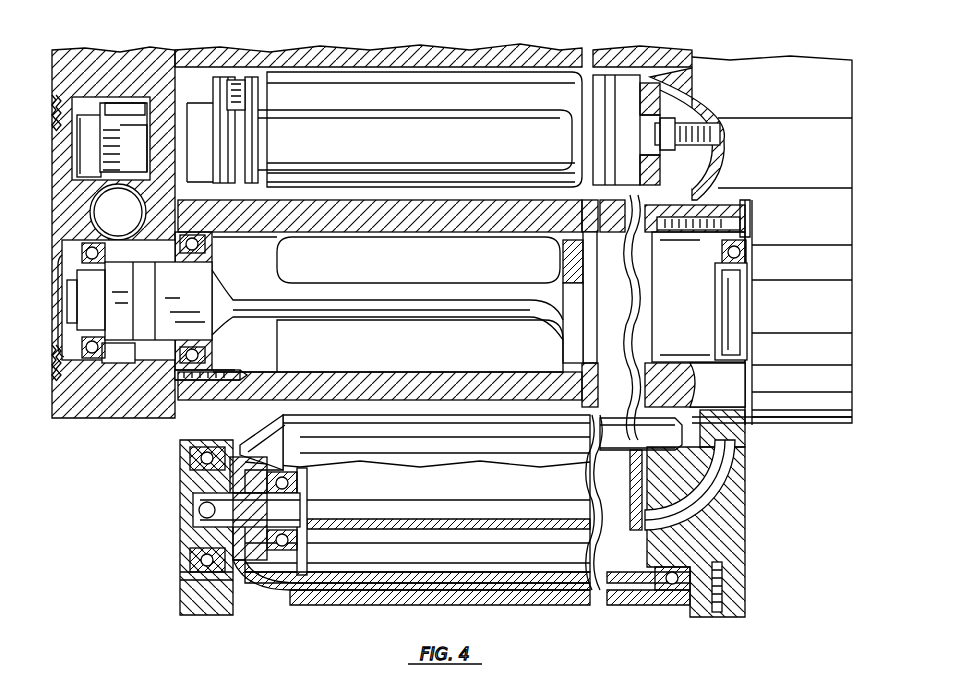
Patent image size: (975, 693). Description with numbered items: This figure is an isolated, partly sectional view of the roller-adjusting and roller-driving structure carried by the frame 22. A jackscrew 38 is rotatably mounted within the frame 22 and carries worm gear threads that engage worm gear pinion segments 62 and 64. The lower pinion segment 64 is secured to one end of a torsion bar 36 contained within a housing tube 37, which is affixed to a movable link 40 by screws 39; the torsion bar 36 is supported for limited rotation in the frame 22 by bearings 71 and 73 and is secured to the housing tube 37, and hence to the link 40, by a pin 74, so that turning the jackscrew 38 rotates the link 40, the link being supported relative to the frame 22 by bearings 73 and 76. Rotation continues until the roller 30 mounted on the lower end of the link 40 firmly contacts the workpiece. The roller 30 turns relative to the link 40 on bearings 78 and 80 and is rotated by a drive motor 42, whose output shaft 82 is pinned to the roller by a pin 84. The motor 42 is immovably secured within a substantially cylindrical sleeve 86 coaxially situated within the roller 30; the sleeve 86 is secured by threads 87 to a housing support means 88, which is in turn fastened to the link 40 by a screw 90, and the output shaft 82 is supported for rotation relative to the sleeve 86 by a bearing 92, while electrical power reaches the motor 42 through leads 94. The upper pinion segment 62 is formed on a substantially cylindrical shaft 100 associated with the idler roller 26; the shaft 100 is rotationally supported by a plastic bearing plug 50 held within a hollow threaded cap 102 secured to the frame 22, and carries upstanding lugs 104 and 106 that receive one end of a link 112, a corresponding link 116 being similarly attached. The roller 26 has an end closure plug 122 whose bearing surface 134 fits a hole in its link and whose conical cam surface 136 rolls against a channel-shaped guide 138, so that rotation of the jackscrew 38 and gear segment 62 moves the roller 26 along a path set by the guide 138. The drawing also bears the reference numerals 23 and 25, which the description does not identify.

The frame 22 is at (772, 239).
The end block 23 is at (66, 405).
The motor housing edge 25 is at (808, 418).
The idler roller 26 is at (424, 129).
The roller 30 is at (500, 607).
The torsion bar 36 is at (395, 313).
The housing tube 37 is at (325, 366).
The jackscrew 38 is at (118, 212).
The screws 39 is at (750, 215).
The link 40 is at (732, 405).
The drive motor 42 is at (417, 493).
The plastic bearing plug 50 is at (95, 125).
The worm gear pinion segment 62 is at (125, 108).
The worm gear pinion segment 64 is at (125, 290).
The bearing 71 is at (102, 352).
The bearing 73 is at (170, 382).
The pin 74 is at (563, 262).
The bearing 76 is at (745, 250).
The bearing 78 is at (180, 572).
The bearing 80 is at (672, 600).
The output shaft 82 is at (190, 540).
The pin 84 is at (200, 497).
The cylindrical sleeve 86 is at (360, 584).
The threads 87 is at (620, 607).
The housing support means 88 is at (735, 525).
The screw 90 is at (738, 586).
The bearing 92 is at (293, 481).
The leads 94 is at (728, 500).
The shaft 100 is at (379, 142).
The hollow threaded cap 102 is at (72, 97).
The lug 104 is at (220, 78).
The lug 106 is at (268, 80).
The link 112 is at (238, 82).
The link 116 is at (615, 75).
The end closure plug 122 is at (700, 90).
The bearing surface 134 is at (648, 90).
The cam surface 136 is at (660, 185).
The channel shaped guide 138 is at (712, 145).